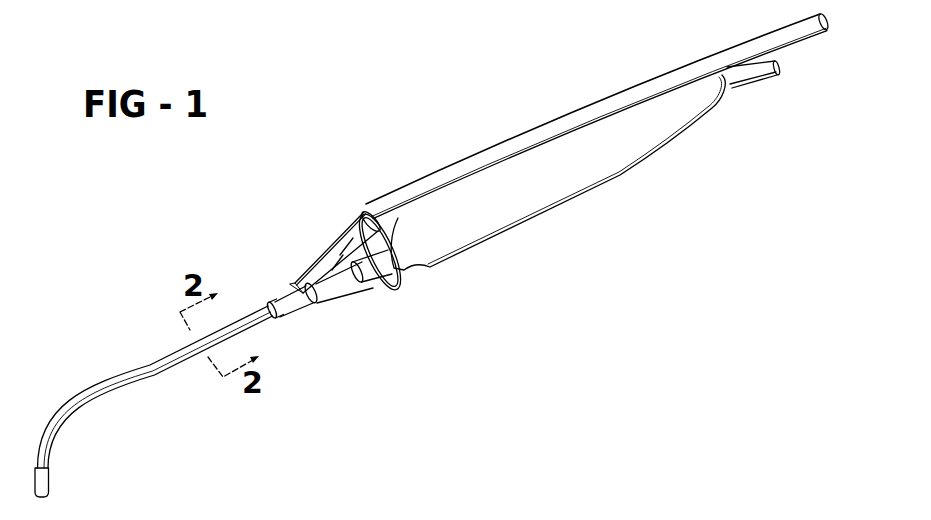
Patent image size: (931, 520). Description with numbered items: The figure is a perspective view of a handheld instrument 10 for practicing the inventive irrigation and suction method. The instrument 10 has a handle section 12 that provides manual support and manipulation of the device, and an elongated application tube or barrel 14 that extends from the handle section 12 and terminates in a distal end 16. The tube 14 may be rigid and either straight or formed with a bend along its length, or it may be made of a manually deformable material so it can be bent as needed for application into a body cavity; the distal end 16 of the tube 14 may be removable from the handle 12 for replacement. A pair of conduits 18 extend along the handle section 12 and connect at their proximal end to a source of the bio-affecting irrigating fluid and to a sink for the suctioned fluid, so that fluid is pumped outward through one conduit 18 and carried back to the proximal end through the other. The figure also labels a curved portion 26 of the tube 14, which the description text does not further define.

The instrument 10 is at (318, 155).
The handle section 12 is at (545, 178).
The application tube 14 is at (113, 382).
The distal end 16 is at (50, 481).
The conduits 18 is at (530, 137).
The curved portion 26 is at (66, 426).